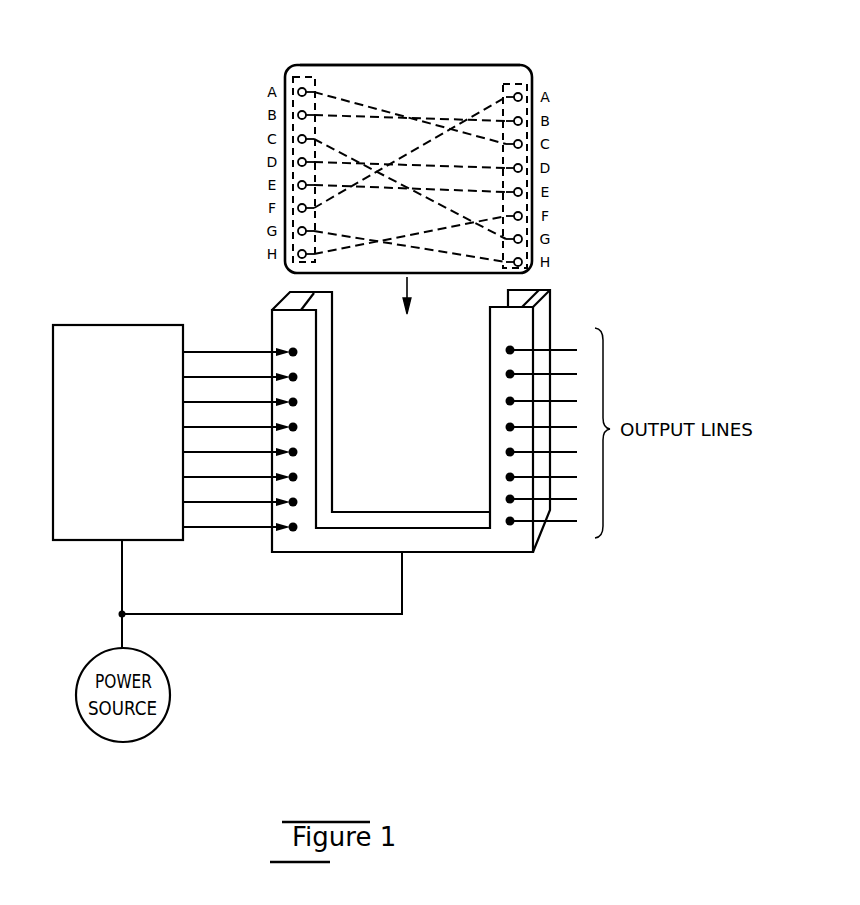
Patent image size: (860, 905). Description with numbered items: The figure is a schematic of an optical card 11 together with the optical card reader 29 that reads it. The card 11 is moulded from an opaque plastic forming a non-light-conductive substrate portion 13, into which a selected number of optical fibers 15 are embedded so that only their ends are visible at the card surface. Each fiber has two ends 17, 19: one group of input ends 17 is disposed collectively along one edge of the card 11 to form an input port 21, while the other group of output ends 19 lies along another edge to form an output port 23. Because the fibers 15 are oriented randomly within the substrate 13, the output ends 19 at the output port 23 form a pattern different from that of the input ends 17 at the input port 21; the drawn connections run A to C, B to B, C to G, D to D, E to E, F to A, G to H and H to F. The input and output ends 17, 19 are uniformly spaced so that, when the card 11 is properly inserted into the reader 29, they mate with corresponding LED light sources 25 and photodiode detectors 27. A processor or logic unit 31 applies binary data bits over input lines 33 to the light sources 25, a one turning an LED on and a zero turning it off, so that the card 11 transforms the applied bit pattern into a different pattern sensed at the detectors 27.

The card 11 is at (469, 65).
The substrate portion 13 is at (337, 65).
The optical fibers 15 is at (425, 121).
The input ends 17 is at (300, 166).
The output ends 19 is at (521, 167).
The input port 21 is at (293, 73).
The output port 23 is at (522, 84).
The light sources 25 is at (293, 530).
The detectors 27 is at (512, 526).
The optical card reader 29 is at (448, 552).
The logic unit 31 is at (120, 325).
The input lines 33 is at (218, 529).